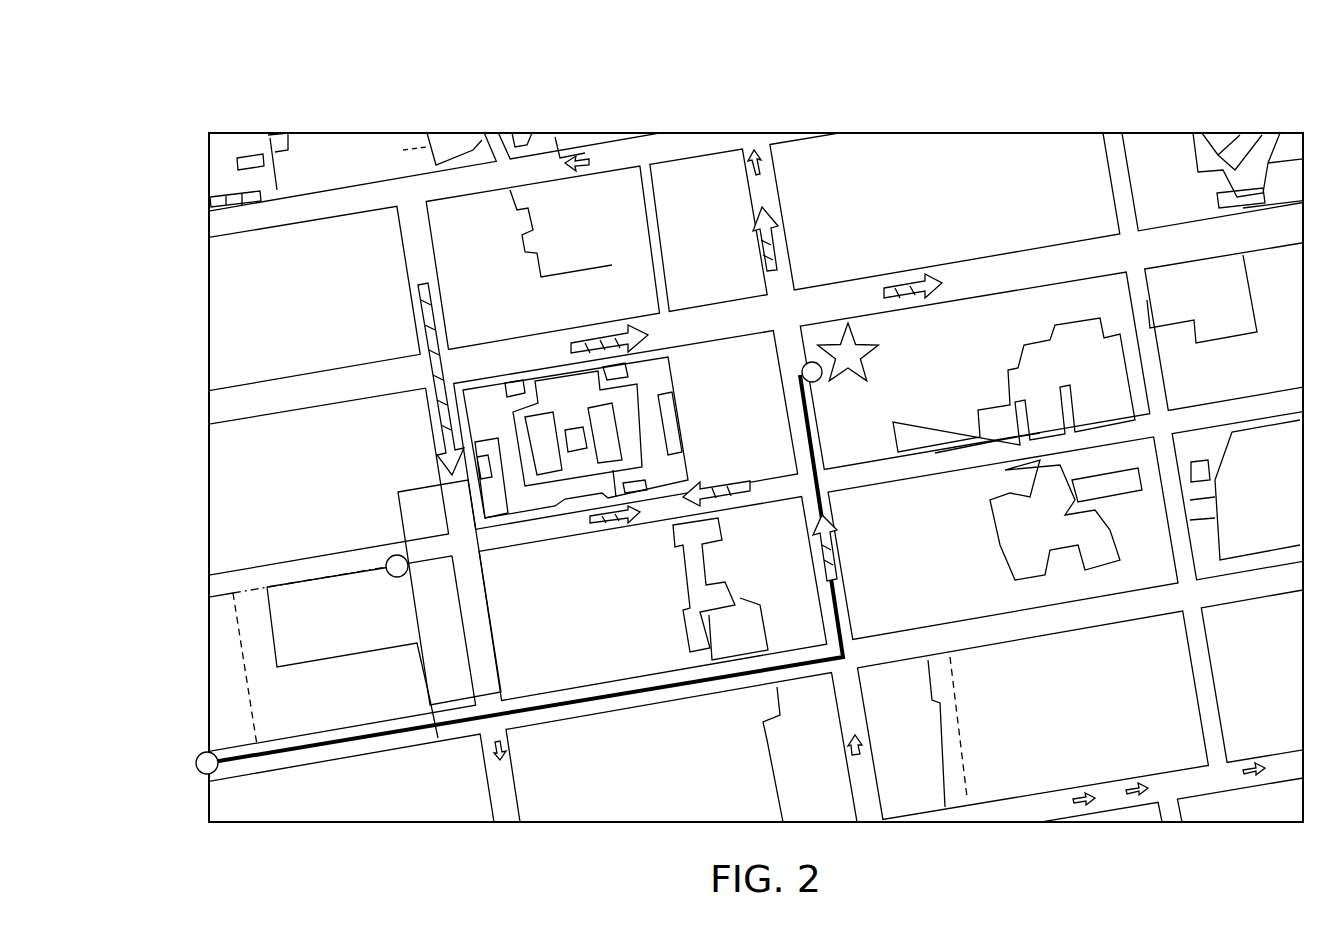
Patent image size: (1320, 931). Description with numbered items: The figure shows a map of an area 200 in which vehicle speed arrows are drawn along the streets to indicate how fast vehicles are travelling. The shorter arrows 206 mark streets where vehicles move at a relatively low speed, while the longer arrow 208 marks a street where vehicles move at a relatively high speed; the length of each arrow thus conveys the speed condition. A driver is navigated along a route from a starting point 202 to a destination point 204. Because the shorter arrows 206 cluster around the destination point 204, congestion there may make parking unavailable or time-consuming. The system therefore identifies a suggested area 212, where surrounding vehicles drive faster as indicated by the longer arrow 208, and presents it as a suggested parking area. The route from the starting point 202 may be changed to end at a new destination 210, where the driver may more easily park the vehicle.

The area 200 is at (228, 102).
The starting point 202 is at (196, 763).
The destination point 204 is at (850, 335).
The shorter arrows 206 is at (765, 210).
The longer arrow 208 is at (432, 299).
The new destination 210 is at (395, 555).
The suggested area 212 is at (425, 480).